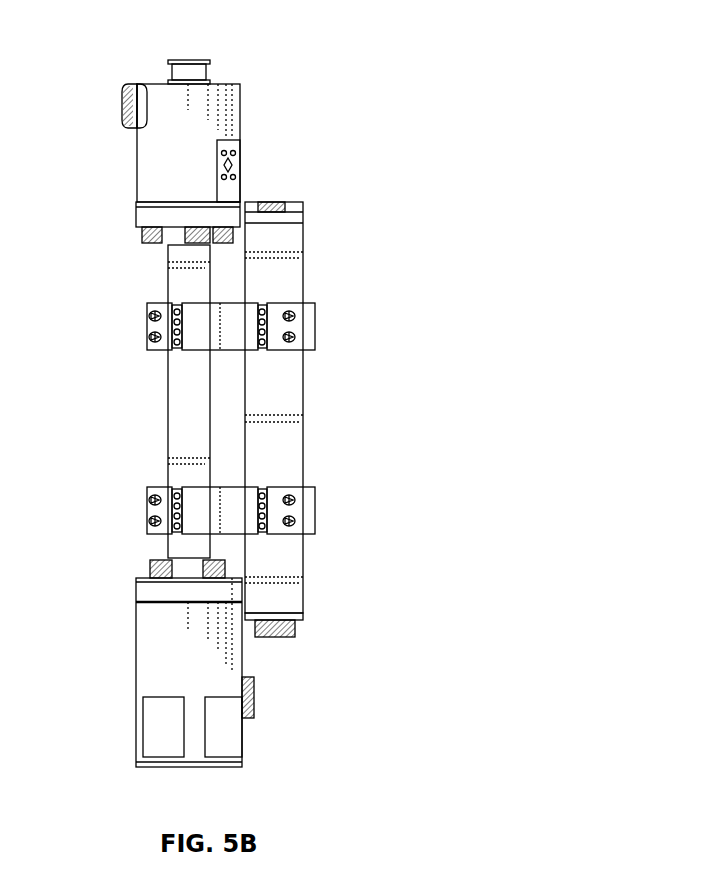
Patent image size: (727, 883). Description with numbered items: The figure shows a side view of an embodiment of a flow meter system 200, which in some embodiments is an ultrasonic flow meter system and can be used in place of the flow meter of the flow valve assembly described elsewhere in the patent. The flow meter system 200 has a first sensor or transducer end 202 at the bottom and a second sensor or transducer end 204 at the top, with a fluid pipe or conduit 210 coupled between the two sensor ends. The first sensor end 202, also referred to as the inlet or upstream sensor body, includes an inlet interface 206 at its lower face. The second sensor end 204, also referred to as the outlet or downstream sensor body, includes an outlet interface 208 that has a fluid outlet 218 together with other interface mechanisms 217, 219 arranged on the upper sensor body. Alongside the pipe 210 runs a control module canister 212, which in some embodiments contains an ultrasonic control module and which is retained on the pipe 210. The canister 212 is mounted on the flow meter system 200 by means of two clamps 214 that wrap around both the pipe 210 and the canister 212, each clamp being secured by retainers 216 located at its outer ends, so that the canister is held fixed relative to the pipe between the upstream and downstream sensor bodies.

The flow meter system 200 is at (350, 26).
The first sensor end 202 is at (150, 660).
The second sensor end 204 is at (146, 153).
The inlet interface 206 is at (232, 768).
The outlet interface 208 is at (228, 82).
The fluid pipe 210 is at (167, 415).
The control module canister 212 is at (304, 433).
The clamps 214 is at (316, 316).
The retainers 216 is at (296, 332).
The interface mechanism 217 is at (118, 105).
The fluid outlet 218 is at (240, 165).
The interface mechanism 219 is at (180, 58).